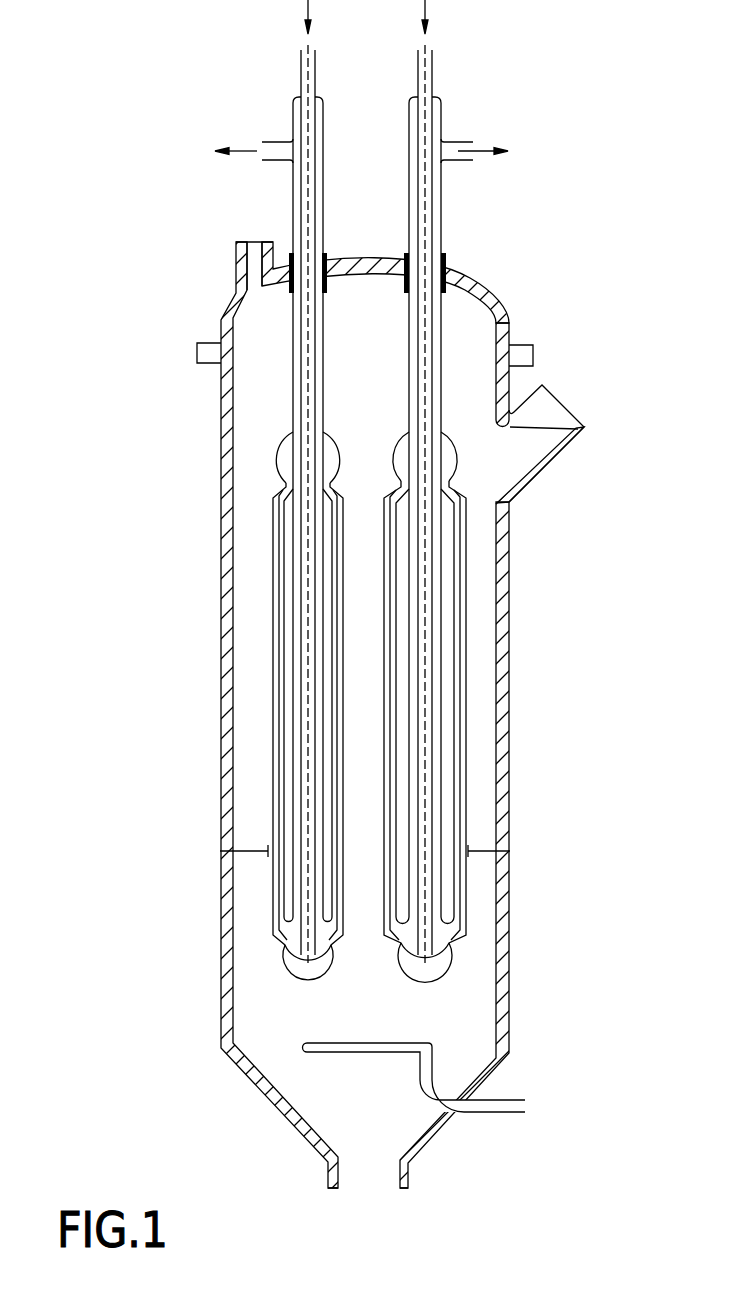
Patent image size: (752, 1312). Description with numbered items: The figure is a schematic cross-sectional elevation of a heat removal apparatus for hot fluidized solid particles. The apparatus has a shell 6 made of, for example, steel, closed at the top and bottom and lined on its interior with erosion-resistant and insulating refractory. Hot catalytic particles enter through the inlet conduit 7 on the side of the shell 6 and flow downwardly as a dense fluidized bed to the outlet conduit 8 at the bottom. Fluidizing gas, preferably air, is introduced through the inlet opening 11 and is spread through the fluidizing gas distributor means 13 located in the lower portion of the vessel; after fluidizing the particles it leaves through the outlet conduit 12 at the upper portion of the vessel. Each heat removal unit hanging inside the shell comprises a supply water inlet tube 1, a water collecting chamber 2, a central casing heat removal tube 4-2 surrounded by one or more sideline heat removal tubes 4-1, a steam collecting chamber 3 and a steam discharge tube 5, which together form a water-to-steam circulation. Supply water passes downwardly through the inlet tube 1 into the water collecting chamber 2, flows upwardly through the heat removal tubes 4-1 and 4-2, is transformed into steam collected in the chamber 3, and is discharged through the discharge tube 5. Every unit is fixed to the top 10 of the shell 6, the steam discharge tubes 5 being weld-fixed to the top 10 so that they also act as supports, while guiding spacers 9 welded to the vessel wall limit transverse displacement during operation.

The supply water inlet tube 1 is at (421, 49).
The water collecting chamber 2 is at (298, 960).
The steam collecting chamber 3 is at (280, 474).
The sideline heat removal tube 4-1 is at (275, 713).
The central casing heat removal tube 4-2 is at (300, 678).
The steam discharge tube 5 is at (436, 233).
The shell 6 is at (220, 528).
The hot catalytic particles inlet conduit 7 is at (590, 382).
The hot catalytic particles outlet conduit 8 is at (369, 1172).
The guiding spacers 9 is at (250, 850).
The top of shell 10 is at (228, 302).
The fluidizing gas inlet opening 11 is at (528, 1108).
The fluidizing gas outlet conduit 12 is at (248, 242).
The fluidizing gas distributor means 13 is at (337, 1043).